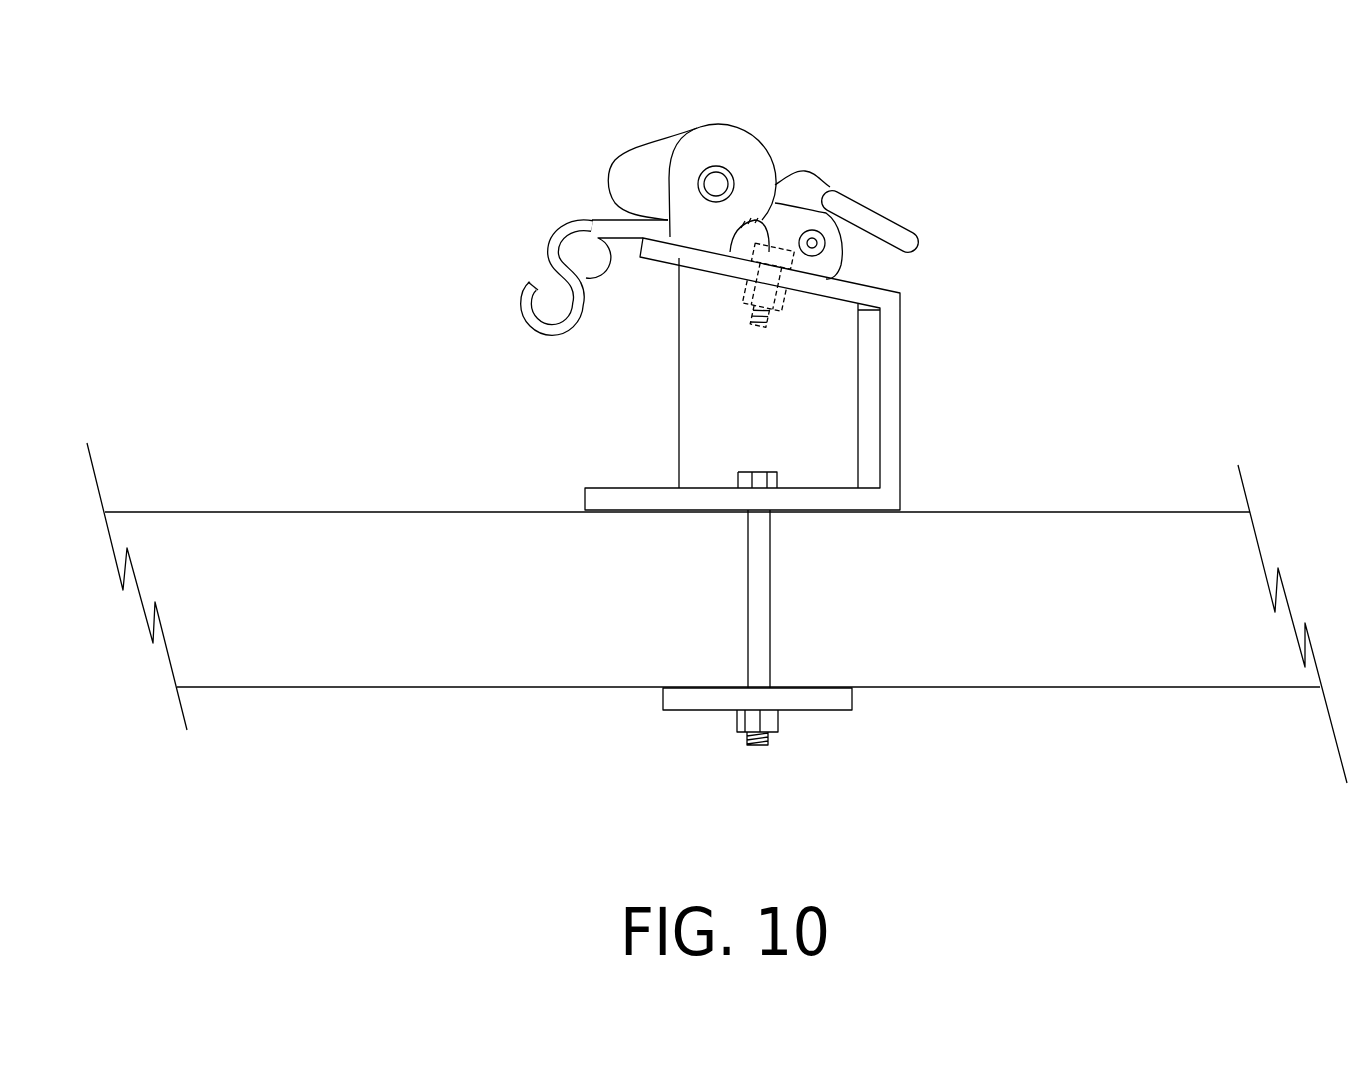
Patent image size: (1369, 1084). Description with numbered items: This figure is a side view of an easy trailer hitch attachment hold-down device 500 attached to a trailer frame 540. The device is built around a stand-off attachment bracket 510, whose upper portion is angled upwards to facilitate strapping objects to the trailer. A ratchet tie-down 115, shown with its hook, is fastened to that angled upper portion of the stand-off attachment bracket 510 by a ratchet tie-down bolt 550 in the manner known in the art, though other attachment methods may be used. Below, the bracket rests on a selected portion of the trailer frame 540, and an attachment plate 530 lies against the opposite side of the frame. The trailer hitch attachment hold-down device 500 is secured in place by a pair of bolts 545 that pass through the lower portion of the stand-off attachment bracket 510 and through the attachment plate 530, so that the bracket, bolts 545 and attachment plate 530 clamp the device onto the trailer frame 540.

The trailer hitch attachment hold-down device 500 is at (242, 172).
The ratchet tie-down 115 is at (687, 158).
The stand-off attachment bracket 510 is at (893, 330).
The attachment plate 530 is at (678, 698).
The trailer frame 540 is at (400, 605).
The bolts 545 is at (757, 592).
The ratchet tie-down bolt 550 is at (743, 303).